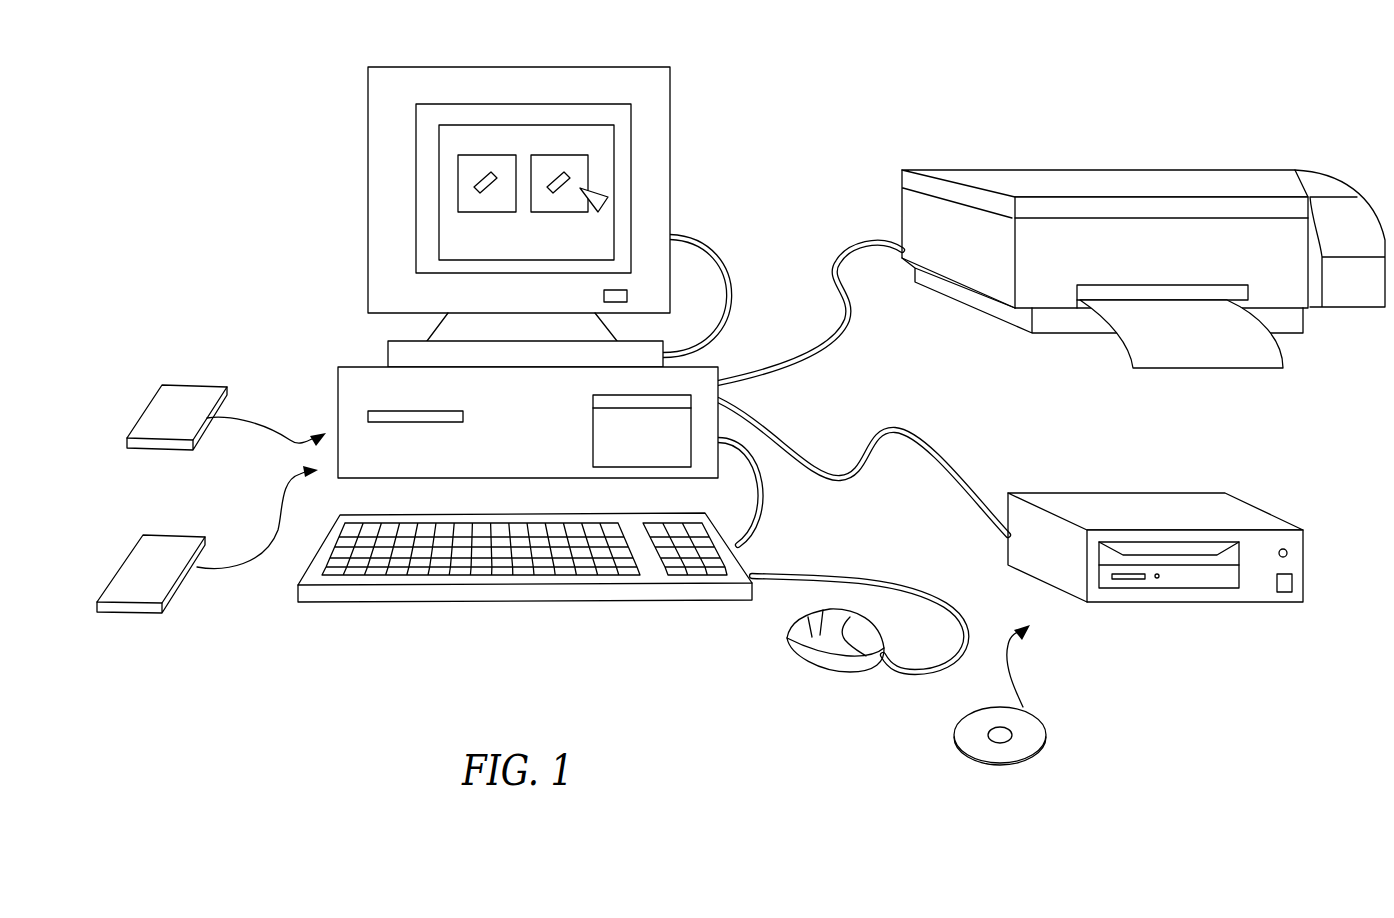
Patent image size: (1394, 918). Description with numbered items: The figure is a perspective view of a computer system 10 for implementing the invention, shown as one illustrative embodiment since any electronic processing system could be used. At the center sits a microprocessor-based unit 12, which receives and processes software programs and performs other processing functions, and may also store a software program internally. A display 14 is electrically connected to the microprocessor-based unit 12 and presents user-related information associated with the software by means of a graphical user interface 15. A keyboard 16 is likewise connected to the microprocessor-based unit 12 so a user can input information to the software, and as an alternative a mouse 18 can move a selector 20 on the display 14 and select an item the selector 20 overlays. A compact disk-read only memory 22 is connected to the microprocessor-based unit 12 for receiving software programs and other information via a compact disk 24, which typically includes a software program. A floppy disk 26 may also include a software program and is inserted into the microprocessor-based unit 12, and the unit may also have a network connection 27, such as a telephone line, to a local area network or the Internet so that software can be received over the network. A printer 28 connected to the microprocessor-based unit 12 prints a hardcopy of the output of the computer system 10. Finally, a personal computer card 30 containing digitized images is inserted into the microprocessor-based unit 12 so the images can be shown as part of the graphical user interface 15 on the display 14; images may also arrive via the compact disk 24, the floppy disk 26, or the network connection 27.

The computer system 10 is at (748, 116).
The microprocessor-based unit 12 is at (360, 367).
The display 14 is at (488, 67).
The graphical user interface 15 is at (510, 135).
The keyboard 16 is at (343, 603).
The mouse 18 is at (823, 667).
The selector 20 is at (586, 190).
The compact disk-read only memory (CD-ROM) 22 is at (1118, 493).
The compact disk 24 is at (1047, 732).
The floppy disk 26 is at (143, 400).
The network connection 27 is at (338, 415).
The printer 28 is at (1100, 170).
The personal computer card (PC card) 30 is at (132, 548).